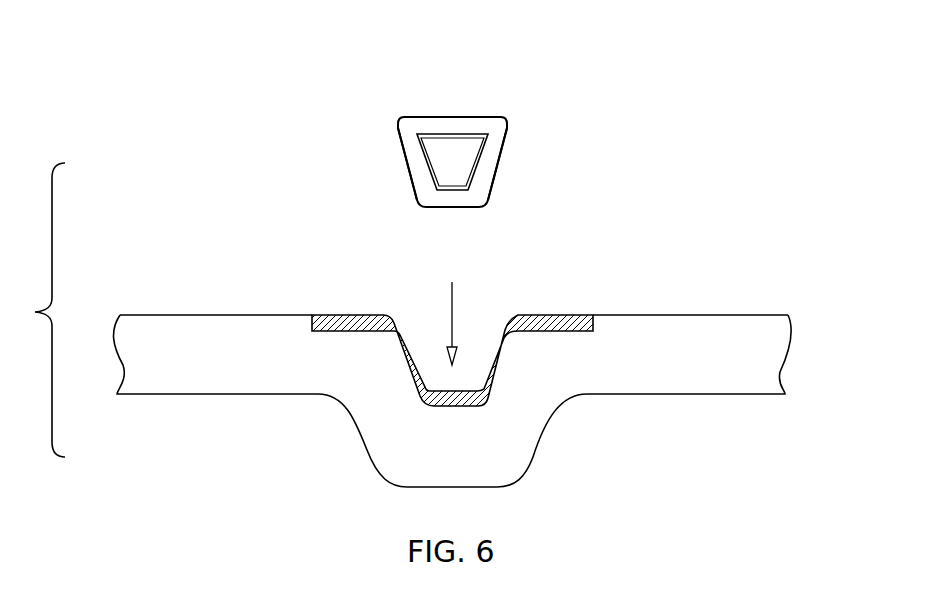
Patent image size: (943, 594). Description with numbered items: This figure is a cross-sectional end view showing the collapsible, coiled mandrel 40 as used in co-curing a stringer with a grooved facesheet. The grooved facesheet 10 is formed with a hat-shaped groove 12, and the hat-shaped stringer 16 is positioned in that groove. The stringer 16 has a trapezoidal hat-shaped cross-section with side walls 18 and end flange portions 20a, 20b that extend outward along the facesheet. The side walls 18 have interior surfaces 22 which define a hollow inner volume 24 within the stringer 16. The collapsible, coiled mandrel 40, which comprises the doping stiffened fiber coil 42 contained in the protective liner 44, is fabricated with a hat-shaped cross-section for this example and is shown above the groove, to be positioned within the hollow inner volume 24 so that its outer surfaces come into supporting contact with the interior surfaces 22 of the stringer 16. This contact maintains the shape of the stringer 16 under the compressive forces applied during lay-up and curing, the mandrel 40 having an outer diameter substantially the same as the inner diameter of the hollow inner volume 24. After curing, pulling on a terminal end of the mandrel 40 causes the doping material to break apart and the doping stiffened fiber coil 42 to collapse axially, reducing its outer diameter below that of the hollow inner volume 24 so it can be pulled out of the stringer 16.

The grooved facesheet 10 is at (183, 325).
The hat-shaped groove 12 is at (417, 338).
The stringer 16 is at (440, 408).
The side walls 18 is at (507, 372).
The end flange portion 20a is at (340, 313).
The end flange portion 20b is at (555, 315).
The interior surfaces 22 is at (495, 338).
The hollow inner volume 24 is at (432, 365).
The collapsible, coiled mandrel 40 is at (468, 82).
The doping stiffened fiber coil 42 is at (482, 160).
The protective liner 44 is at (402, 143).